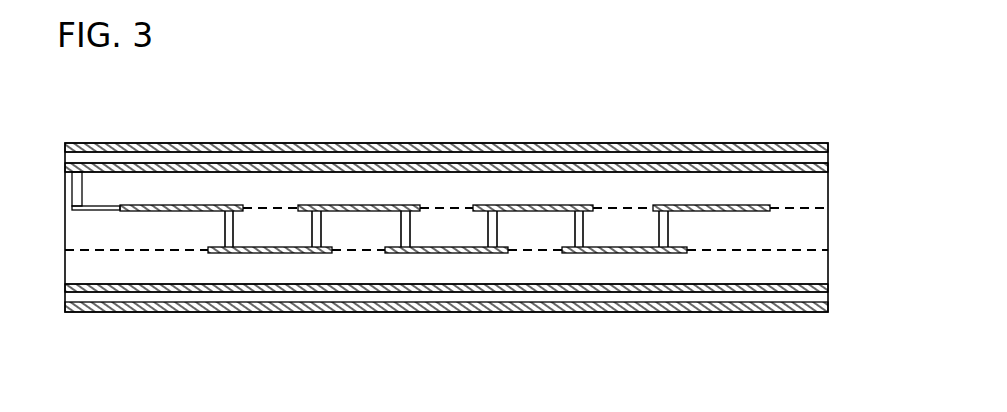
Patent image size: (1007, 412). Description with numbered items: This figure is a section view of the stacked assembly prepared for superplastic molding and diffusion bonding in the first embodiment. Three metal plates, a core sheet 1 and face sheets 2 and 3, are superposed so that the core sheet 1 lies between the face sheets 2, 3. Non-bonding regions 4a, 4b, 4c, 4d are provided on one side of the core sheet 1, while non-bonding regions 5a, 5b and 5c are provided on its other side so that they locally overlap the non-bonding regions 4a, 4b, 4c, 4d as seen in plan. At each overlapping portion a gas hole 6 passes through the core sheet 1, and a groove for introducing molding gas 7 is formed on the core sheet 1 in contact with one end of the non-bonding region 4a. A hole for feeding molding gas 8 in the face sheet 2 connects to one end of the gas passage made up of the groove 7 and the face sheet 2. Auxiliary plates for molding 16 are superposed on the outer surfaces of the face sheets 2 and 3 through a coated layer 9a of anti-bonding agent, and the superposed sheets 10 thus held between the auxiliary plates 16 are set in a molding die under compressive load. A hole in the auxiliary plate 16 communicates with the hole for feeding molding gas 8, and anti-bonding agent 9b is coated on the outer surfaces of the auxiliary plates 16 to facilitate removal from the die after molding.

The core sheet 1 is at (815, 230).
The face sheet 2 is at (815, 186).
The face sheet 3 is at (815, 269).
The non-bonding region 4a is at (123, 212).
The non-bonding region 4b is at (350, 212).
The non-bonding region 4c is at (523, 212).
The non-bonding region 4d is at (730, 212).
The non-bonding region 5a is at (270, 247).
The non-bonding region 5b is at (452, 247).
The non-bonding region 5c is at (625, 247).
The gas hole 6 is at (311, 226).
The groove for introducing molding gas 7 is at (82, 213).
The hole for feeding molding gas 8 is at (72, 178).
The coated layer 9a is at (170, 168).
The anti-bonding agent 9b is at (712, 147).
The superposed sheets 10 is at (65, 268).
The auxiliary plate for molding 16 is at (365, 158).